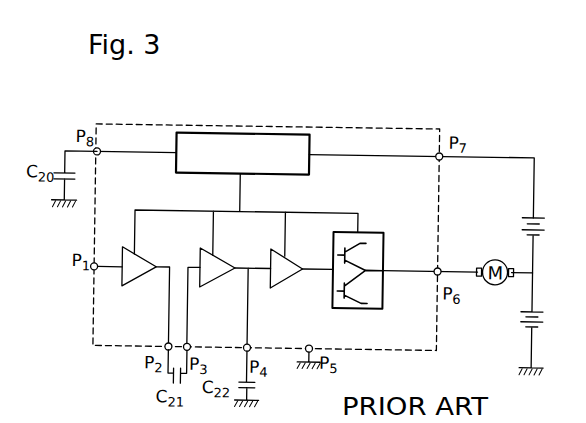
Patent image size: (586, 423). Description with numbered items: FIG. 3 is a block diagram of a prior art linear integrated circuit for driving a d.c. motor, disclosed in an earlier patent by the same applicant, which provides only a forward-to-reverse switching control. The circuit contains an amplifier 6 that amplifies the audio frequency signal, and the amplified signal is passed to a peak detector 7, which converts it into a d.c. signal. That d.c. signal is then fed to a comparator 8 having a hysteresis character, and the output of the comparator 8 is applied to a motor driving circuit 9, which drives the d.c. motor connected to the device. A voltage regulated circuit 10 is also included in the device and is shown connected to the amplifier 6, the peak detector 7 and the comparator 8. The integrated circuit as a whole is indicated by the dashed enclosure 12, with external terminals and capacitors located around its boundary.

The amplifier 6 is at (140, 273).
The peak detector 7 is at (216, 273).
The comparator 8 is at (289, 274).
The motor driving circuit 9 is at (380, 240).
The voltage regulated circuit 10 is at (261, 143).
The integrated circuit (dashed enclosure) 12 is at (354, 134).